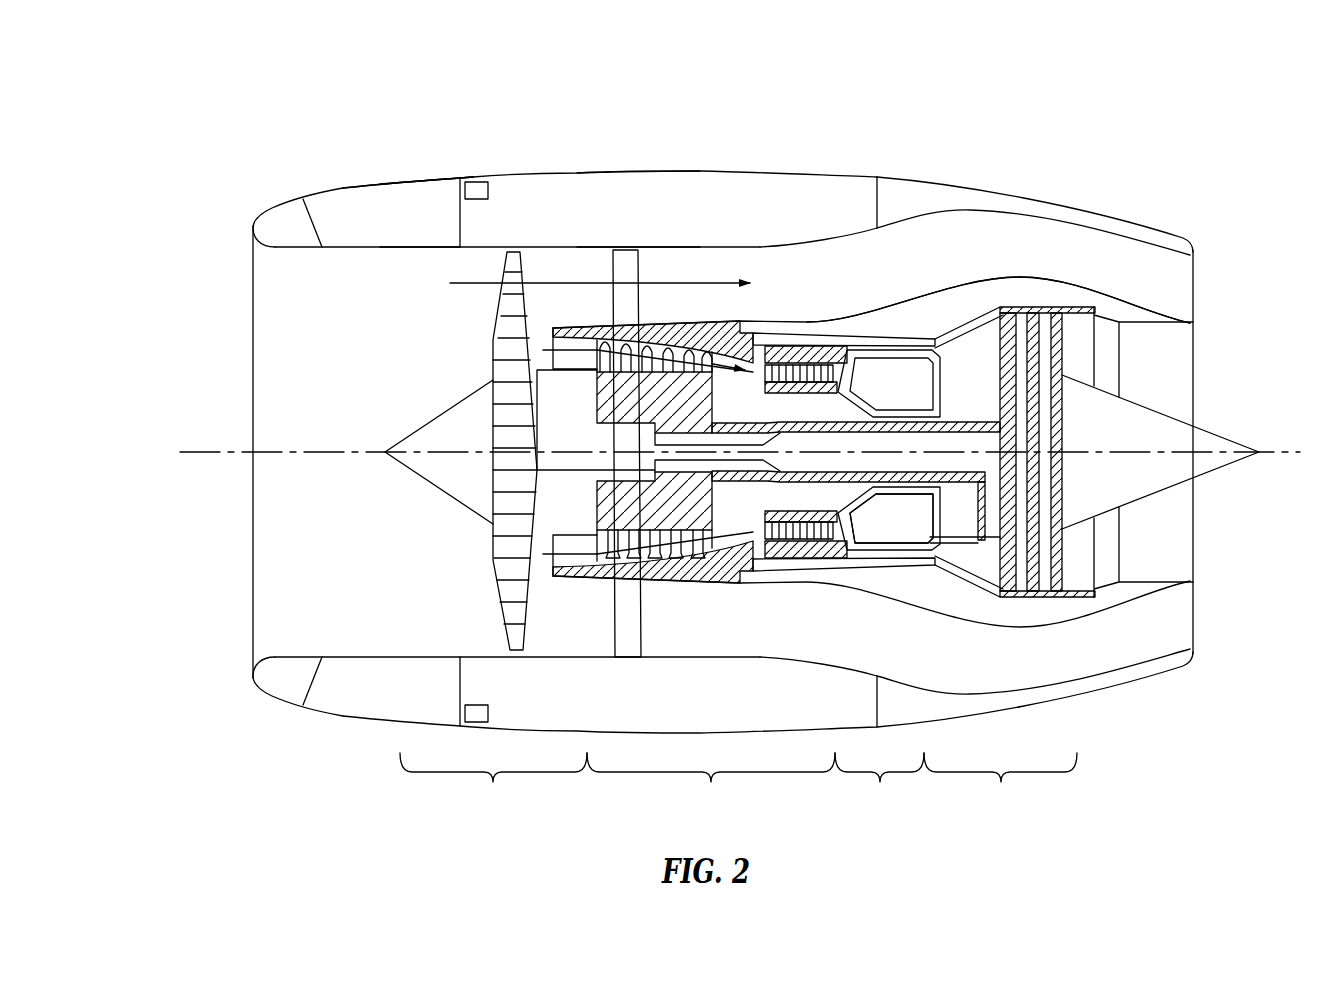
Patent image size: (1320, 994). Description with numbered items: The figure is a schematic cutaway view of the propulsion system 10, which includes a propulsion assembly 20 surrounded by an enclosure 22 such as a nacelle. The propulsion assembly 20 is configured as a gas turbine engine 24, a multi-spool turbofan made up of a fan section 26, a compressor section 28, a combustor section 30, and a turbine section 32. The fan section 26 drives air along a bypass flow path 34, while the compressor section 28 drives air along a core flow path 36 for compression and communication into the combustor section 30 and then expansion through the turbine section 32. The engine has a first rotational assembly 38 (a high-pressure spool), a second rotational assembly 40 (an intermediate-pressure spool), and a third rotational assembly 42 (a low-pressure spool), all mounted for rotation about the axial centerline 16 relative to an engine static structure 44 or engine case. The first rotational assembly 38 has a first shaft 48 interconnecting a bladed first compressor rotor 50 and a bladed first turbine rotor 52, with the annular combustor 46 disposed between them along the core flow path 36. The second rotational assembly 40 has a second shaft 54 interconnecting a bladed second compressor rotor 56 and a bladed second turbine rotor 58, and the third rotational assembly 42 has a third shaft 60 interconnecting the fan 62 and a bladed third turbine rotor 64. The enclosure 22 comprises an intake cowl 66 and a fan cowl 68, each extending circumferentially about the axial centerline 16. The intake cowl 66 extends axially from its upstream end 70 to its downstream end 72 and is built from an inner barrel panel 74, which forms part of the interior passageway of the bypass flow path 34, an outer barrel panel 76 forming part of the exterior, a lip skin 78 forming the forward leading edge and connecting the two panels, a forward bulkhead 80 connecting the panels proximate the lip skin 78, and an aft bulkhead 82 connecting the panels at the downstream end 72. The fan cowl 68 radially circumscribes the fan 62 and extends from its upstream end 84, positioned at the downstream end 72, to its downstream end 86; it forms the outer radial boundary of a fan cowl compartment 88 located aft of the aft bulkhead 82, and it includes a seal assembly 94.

The propulsion system 10 is at (1194, 168).
The axial centerline 16 is at (210, 456).
The propulsion assembly 20 is at (1003, 268).
The enclosure 22 is at (990, 158).
The gas turbine engine 24 is at (1081, 275).
The fan section 26 is at (493, 784).
The compressor section 28 is at (711, 784).
The combustor section 30 is at (879, 784).
The turbine section 32 is at (1000, 784).
The bypass flow path 34 is at (722, 286).
The core flow path 36 is at (727, 373).
The first rotational assembly 38 is at (871, 507).
The second rotational assembly 40 is at (767, 483).
The third rotational assembly 42 is at (635, 463).
The engine static structure 44 is at (964, 312).
The annular combustor 46 is at (870, 538).
The first shaft 48 is at (903, 494).
The bladed first compressor rotor 50 is at (803, 518).
The bladed first turbine rotor 52 is at (933, 541).
The second shaft 54 is at (743, 466).
The bladed second compressor rotor 56 is at (615, 505).
The bladed second turbine rotor 58 is at (985, 513).
The third shaft 60 is at (582, 447).
The fan 62 is at (515, 377).
The bladed third turbine rotor 64 is at (1072, 428).
The intake cowl 66 is at (349, 155).
The fan cowl 68 is at (686, 158).
The upstream end 70 is at (246, 226).
The downstream end 72 is at (468, 240).
The inner barrel panel 74 is at (380, 250).
The outer barrel panel 76 is at (405, 180).
The lip skin 78 is at (256, 218).
The forward bulkhead 80 is at (318, 212).
The aft bulkhead 82 is at (462, 677).
The upstream end 84 is at (445, 220).
The downstream end 86 is at (881, 205).
The fan cowl compartment 88 is at (655, 221).
The seal assembly 94 is at (478, 180).